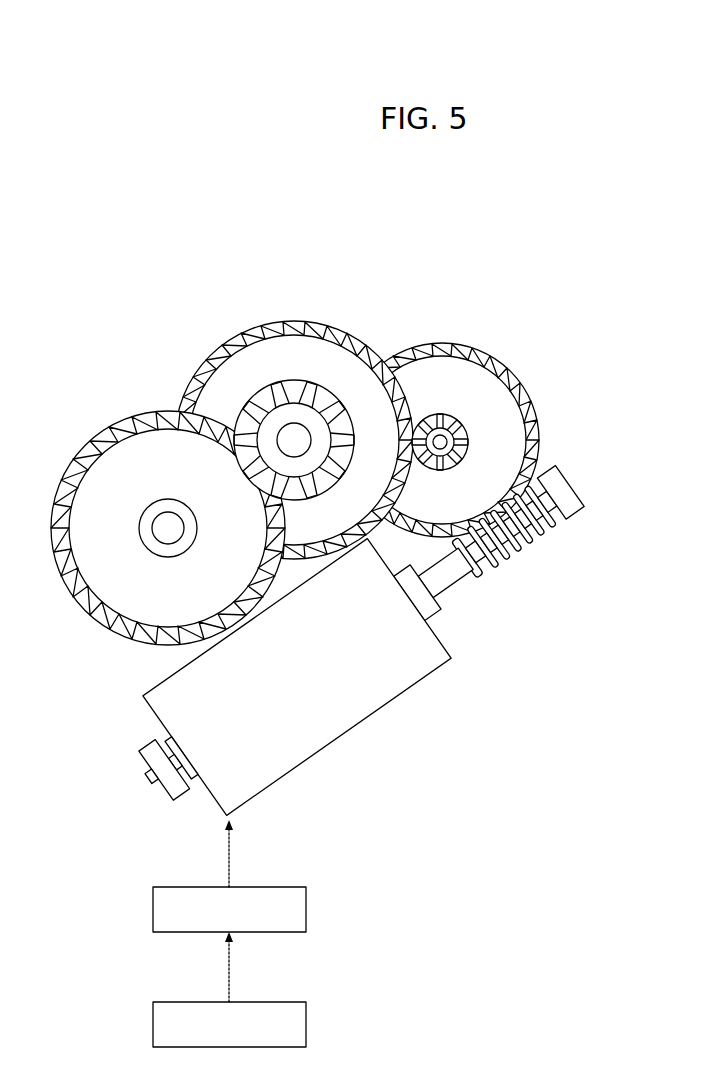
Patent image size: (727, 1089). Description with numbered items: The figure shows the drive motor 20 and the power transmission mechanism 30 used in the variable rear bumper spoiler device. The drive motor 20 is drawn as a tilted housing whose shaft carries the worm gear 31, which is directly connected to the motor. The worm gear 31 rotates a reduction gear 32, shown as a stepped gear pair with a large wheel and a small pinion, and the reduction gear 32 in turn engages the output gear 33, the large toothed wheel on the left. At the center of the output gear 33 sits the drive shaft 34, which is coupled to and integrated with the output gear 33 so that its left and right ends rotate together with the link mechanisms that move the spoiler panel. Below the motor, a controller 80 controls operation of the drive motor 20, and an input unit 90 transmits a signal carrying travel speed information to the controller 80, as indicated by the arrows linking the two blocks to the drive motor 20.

The drive motor 20 is at (330, 724).
The power transmission mechanism 30 is at (309, 441).
The worm gear 31 is at (513, 553).
The reduction gear 32 is at (279, 458).
The output gear 33 is at (152, 522).
The drive shaft 34 is at (165, 527).
The controller 80 is at (153, 906).
The input unit 90 is at (153, 1021).